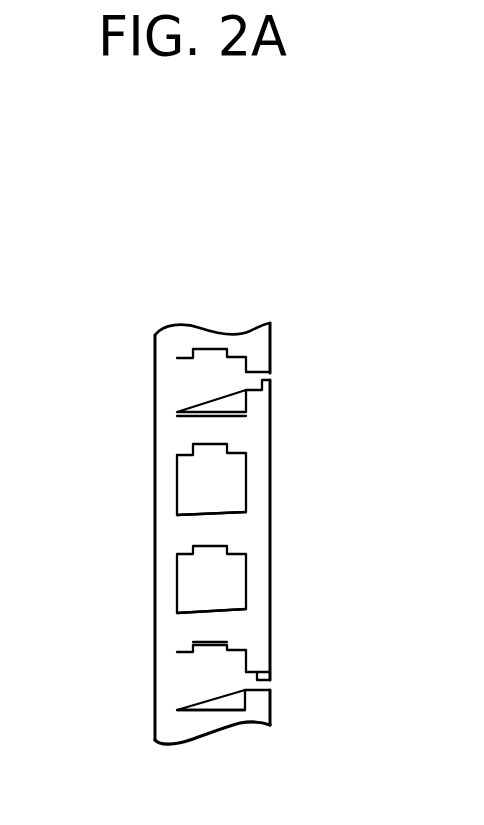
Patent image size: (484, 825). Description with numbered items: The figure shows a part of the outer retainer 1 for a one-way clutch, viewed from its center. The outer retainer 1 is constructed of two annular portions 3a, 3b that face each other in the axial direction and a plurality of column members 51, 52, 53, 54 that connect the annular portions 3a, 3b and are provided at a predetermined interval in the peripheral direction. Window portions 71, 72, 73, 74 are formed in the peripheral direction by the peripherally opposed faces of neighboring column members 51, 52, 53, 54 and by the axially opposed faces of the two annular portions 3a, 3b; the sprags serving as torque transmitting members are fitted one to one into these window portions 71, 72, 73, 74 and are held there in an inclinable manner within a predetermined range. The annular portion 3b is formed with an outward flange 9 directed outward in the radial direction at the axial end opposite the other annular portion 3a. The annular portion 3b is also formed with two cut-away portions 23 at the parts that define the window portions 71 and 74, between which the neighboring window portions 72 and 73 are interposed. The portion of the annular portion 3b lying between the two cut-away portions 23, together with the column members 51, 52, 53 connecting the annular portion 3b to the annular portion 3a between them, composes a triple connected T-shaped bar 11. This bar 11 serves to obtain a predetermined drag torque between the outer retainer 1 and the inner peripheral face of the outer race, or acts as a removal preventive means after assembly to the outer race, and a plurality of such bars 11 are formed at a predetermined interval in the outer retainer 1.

The outer retainer 1 is at (328, 291).
The annular portion 3a is at (170, 343).
The annular portion 3b is at (255, 562).
The triple connected T-shaped bar 11 is at (273, 478).
The cut-away portion 23 is at (276, 374).
The outward flange 9 is at (272, 672).
The window portion 71 is at (193, 391).
The window portion 72 is at (193, 482).
The window portion 73 is at (193, 583).
The window portion 74 is at (193, 677).
The column member 51 is at (218, 433).
The column member 52 is at (223, 533).
The column member 53 is at (223, 622).
The column member 54 is at (203, 723).